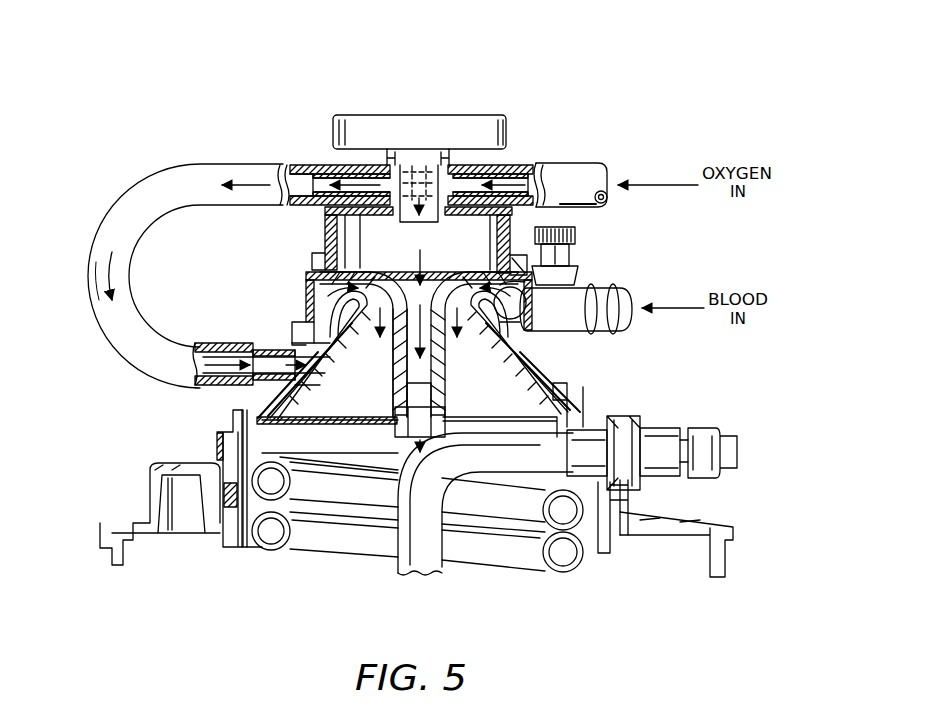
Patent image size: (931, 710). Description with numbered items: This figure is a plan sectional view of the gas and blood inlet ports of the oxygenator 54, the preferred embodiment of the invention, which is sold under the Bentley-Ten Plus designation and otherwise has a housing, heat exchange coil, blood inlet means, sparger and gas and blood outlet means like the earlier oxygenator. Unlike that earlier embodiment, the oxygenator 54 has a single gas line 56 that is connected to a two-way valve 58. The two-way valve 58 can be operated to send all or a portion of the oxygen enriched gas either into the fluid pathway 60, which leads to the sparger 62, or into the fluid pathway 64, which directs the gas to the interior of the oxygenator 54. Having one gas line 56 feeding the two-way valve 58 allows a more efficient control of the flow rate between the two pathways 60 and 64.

The oxygenator 54 is at (288, 140).
The gas line 56 is at (600, 165).
The two-way valve 58 is at (512, 104).
The fluid pathway 60 is at (134, 331).
The sparger 62 is at (288, 318).
The fluid pathway 64 is at (500, 221).